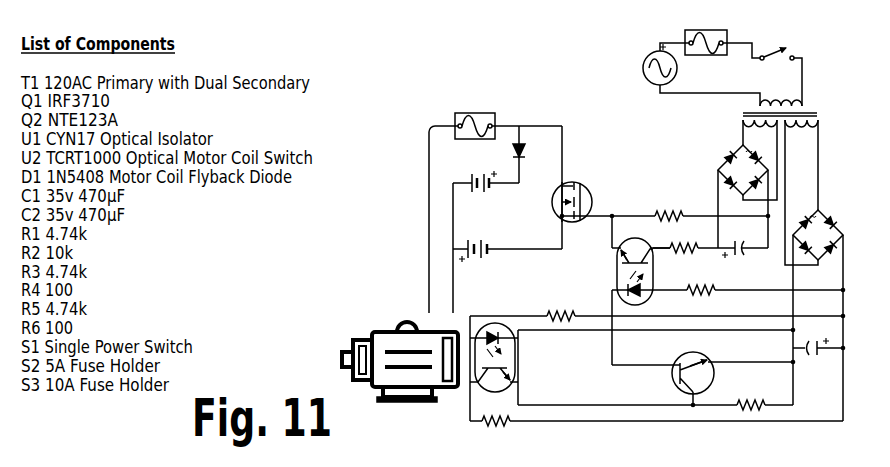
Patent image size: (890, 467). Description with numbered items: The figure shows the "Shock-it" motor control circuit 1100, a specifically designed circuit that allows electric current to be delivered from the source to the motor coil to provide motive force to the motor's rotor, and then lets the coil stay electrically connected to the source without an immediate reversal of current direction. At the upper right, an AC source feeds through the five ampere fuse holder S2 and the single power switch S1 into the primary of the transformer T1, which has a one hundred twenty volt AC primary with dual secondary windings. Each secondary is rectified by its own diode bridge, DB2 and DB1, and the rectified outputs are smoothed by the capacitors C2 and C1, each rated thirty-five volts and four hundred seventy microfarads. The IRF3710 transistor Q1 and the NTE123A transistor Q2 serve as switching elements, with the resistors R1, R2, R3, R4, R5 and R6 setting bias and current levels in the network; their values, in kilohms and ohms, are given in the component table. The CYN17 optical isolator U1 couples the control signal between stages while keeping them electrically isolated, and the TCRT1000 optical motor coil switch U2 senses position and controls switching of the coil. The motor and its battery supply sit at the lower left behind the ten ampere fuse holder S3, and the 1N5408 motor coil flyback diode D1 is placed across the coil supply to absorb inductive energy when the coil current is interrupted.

The motor circuit 1100 is at (593, 228).
The 120AC primary transformer with dual secondary T1 is at (784, 108).
The IRF3710 transistor Q1 is at (580, 202).
The NTE123A transistor Q2 is at (693, 367).
The CYN17 optical isolator U1 is at (645, 271).
The TCRT1000 optical motor coil switch U2 is at (505, 357).
The 1N5408 motor coil flyback diode D1 is at (527, 152).
The 35v 470μF capacitor C1 is at (818, 338).
The 35v 470μF capacitor C2 is at (735, 241).
The 4.74k resistor R1 is at (669, 209).
The 10k resistor R2 is at (684, 241).
The 4.74k resistor R3 is at (751, 398).
The 100 ohm resistor R4 is at (701, 283).
The 4.74k resistor R5 is at (496, 414).
The 100 ohm resistor R6 is at (561, 309).
The single power switch S1 is at (777, 59).
The 5A fuse holder S2 is at (706, 50).
The 10A fuse holder S3 is at (475, 133).
The diode bridge DB1 is at (819, 229).
The diode bridge DB2 is at (738, 163).